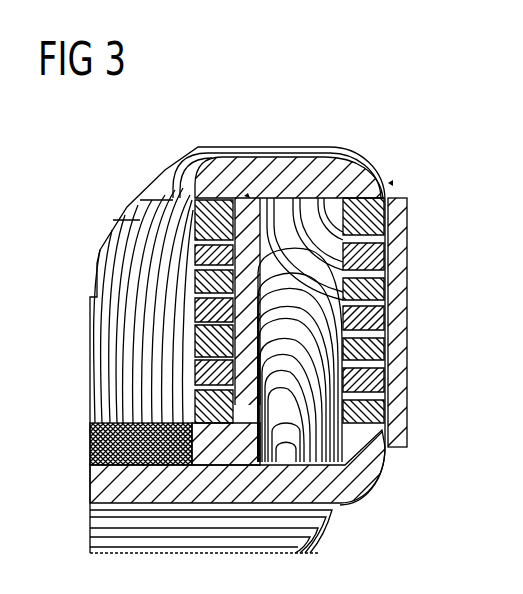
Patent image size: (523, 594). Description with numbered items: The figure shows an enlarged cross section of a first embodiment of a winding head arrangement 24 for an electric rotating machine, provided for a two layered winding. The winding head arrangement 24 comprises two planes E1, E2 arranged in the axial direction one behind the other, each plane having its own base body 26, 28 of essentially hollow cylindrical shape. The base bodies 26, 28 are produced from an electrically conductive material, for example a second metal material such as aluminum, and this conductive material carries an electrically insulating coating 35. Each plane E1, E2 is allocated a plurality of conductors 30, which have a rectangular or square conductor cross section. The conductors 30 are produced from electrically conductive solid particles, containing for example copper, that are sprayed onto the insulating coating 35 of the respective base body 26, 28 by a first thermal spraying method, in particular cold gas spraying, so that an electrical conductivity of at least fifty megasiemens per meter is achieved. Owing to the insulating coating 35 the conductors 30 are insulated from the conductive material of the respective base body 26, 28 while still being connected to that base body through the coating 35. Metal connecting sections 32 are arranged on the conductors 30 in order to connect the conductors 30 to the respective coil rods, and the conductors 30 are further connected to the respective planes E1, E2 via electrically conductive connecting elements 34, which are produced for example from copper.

The winding head arrangement 24 is at (358, 104).
The base body 26 is at (178, 342).
The base body 28 is at (398, 260).
The conductors 30 is at (120, 262).
The metal connecting sections 32 is at (333, 478).
The electrically conductive connecting elements 34 is at (293, 157).
The electrically insulating coating 35 is at (160, 396).
The first plane E1 is at (247, 197).
The second plane E2 is at (392, 183).